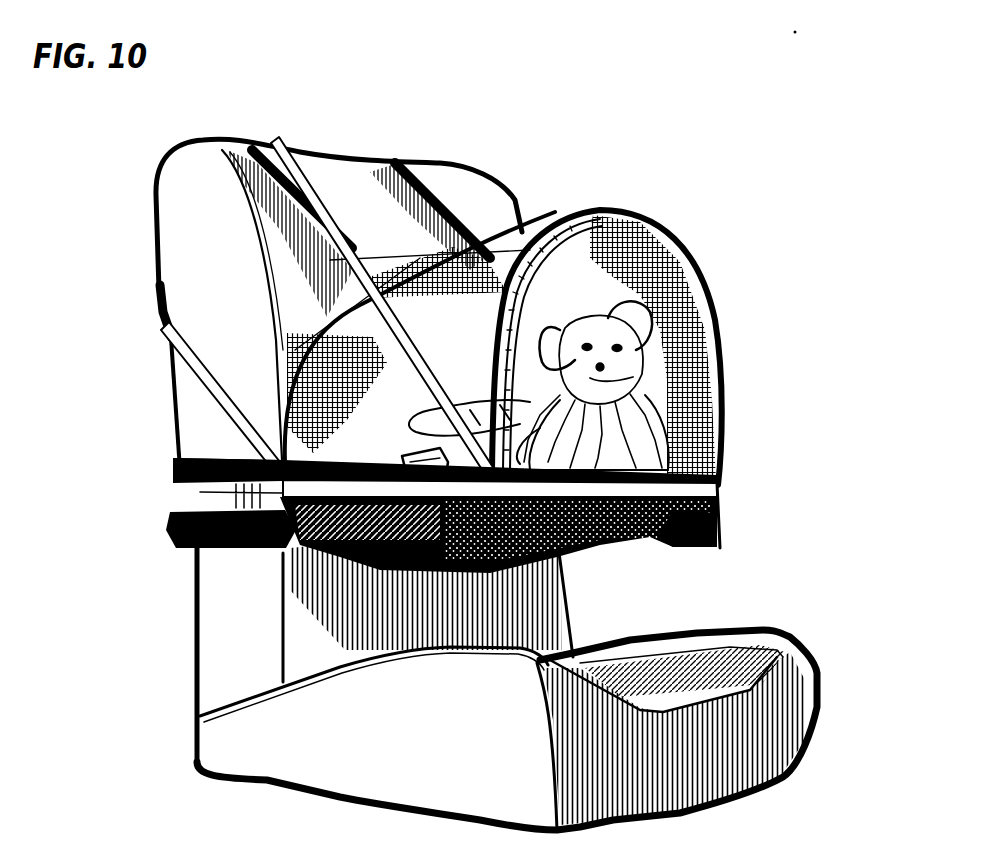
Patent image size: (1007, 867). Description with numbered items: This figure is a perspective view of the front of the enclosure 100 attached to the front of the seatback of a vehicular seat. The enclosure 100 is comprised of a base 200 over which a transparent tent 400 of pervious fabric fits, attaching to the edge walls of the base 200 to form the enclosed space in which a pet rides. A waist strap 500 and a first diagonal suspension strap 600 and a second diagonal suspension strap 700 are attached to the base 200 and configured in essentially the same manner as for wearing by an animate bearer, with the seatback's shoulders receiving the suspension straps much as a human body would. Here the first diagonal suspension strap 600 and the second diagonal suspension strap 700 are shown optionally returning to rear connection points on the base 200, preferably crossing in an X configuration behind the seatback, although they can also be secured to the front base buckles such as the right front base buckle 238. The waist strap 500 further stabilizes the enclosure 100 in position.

The enclosure 100 is at (467, 369).
The base 200 is at (720, 537).
The right front base buckle 238 is at (402, 474).
The transparent tent 400 is at (716, 392).
The waist strap 500 is at (186, 510).
The first diagonal suspension strap 600 is at (413, 162).
The second diagonal suspension strap 700 is at (278, 142).